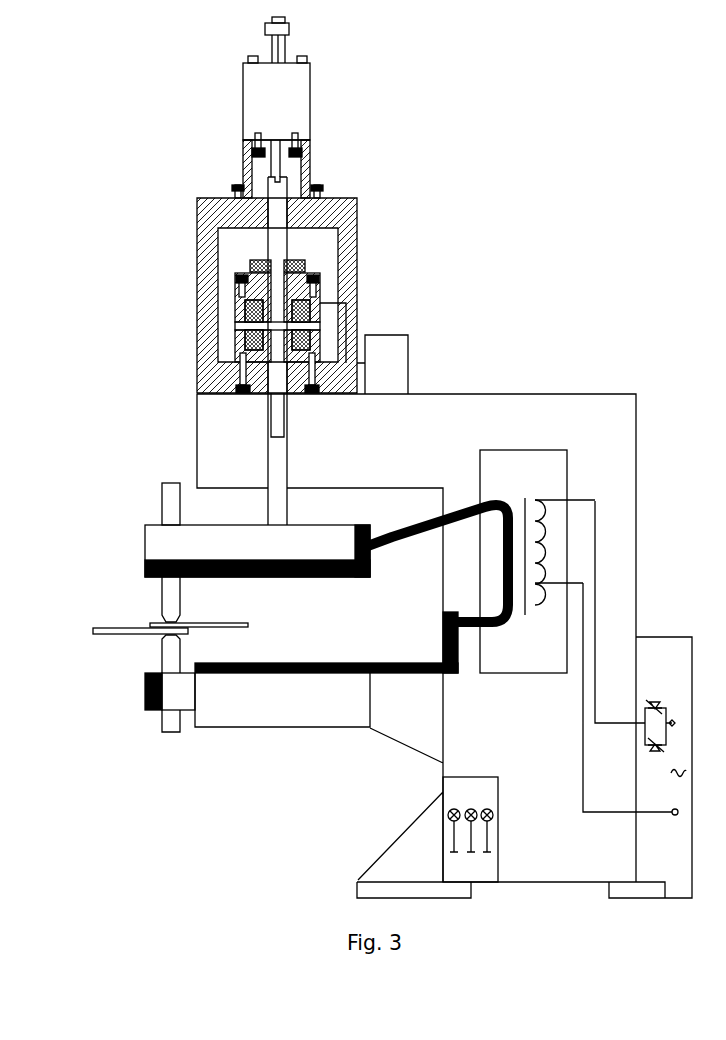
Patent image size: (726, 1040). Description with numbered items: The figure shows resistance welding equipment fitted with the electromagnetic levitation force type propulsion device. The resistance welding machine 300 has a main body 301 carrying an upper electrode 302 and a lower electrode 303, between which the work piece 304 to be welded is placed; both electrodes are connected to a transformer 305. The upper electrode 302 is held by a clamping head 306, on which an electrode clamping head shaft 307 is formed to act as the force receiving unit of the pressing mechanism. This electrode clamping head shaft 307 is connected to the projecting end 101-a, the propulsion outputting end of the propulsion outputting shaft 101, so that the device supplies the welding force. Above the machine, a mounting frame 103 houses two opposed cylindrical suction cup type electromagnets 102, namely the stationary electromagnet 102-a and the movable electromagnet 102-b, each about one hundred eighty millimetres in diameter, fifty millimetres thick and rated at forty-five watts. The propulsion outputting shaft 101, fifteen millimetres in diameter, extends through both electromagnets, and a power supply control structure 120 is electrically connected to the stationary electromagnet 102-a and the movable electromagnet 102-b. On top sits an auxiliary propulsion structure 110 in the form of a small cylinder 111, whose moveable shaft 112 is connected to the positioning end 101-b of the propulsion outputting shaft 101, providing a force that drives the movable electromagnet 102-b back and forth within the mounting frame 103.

The small cylinder 111 is at (267, 90).
The auxiliary propulsion structure 110 is at (297, 125).
The moveable shaft 112 is at (282, 162).
The positioning end 101-b is at (432, 182).
The mounting frame 103 is at (197, 200).
The propulsion outputting shaft 101 is at (271, 247).
The electromagnetic clutch mechanism 102 is at (227, 294).
The stationary electromagnet 102-a is at (235, 348).
The movable electromagnet 102-b is at (318, 297).
The power supply control structure 120 is at (443, 312).
The projecting end 101-a is at (278, 407).
The electrode clamping head shaft 307 is at (277, 475).
The resistance welding machine 300 is at (447, 619).
The main body 301 is at (585, 422).
The transformer 305 is at (525, 553).
The clamping head 306 is at (162, 534).
The upper electrode 302 is at (170, 604).
The work piece 304 is at (153, 625).
The lower electrode 303 is at (173, 669).